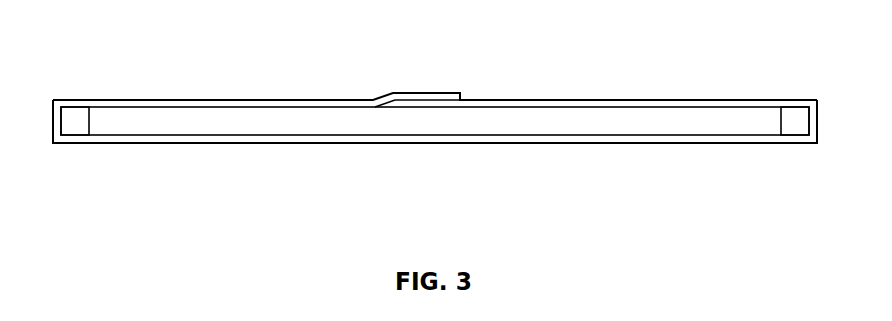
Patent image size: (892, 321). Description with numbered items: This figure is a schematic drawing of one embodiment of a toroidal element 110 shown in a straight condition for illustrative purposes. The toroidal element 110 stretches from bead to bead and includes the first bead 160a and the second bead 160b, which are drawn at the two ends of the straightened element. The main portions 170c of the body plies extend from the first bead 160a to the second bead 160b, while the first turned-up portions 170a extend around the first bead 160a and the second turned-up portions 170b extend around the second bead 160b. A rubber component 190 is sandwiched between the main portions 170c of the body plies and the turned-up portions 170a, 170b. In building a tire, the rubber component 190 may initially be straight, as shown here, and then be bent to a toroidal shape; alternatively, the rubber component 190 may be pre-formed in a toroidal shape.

The toroidal element 110 is at (684, 75).
The first turned-up portions 170a is at (502, 100).
The second turned-up portions 170b is at (258, 100).
The main portions 170c is at (470, 143).
The rubber component 190 is at (578, 122).
The first bead 160a is at (791, 127).
The second bead 160b is at (76, 127).